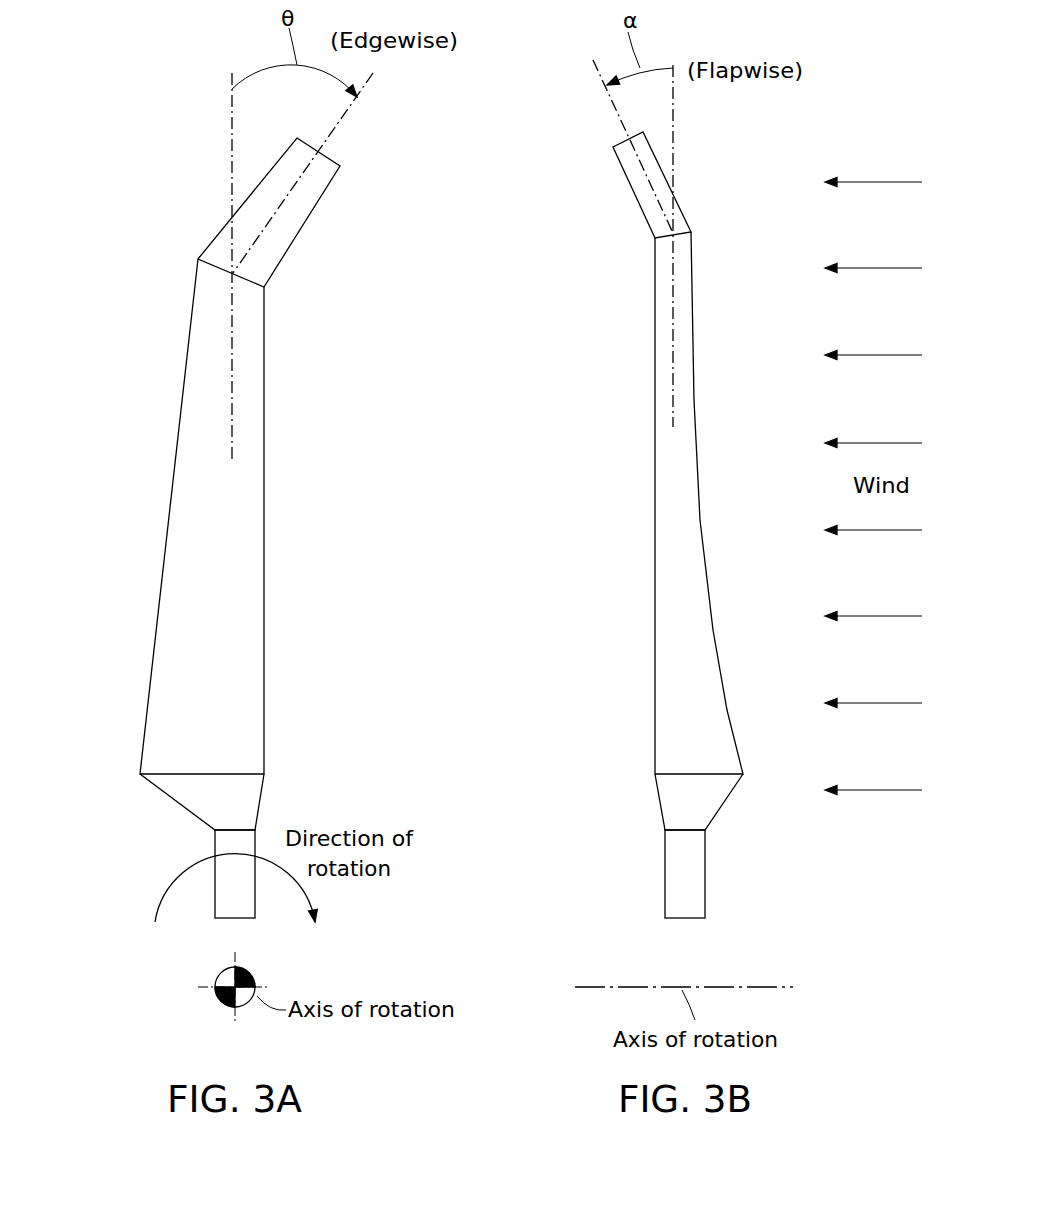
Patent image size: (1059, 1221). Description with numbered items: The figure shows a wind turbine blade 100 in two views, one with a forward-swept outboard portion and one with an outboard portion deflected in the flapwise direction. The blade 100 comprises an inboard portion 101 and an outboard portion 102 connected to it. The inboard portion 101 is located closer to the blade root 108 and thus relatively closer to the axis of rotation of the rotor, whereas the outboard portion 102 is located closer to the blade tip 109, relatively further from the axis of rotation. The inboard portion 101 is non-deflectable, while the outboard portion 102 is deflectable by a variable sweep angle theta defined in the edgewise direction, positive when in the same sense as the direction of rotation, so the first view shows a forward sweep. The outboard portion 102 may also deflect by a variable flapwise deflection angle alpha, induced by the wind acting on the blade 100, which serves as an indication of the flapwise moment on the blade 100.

In FIG. 3A, the blade 100 is at (287, 415).
In FIG. 3B, the blade 100 is at (527, 615).
In FIG. 3A, the inboard portion 101 is at (100, 260).
In FIG. 3B, the inboard portion 101 is at (577, 242).
In FIG. 3A, the outboard portion 102 is at (100, 137).
In FIG. 3B, the outboard portion 102 is at (577, 137).
In FIG. 3A, the blade root 108 is at (158, 818).
In FIG. 3B, the blade root 108 is at (608, 820).
In FIG. 3A, the blade tip 109 is at (195, 78).
In FIG. 3B, the blade tip 109 is at (593, 107).